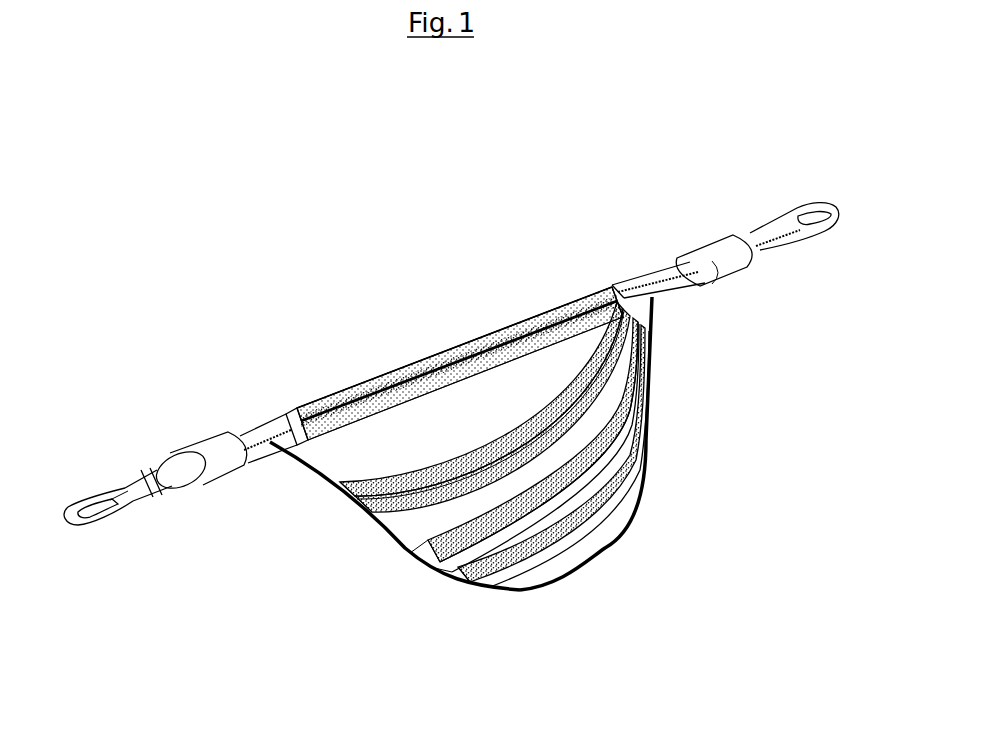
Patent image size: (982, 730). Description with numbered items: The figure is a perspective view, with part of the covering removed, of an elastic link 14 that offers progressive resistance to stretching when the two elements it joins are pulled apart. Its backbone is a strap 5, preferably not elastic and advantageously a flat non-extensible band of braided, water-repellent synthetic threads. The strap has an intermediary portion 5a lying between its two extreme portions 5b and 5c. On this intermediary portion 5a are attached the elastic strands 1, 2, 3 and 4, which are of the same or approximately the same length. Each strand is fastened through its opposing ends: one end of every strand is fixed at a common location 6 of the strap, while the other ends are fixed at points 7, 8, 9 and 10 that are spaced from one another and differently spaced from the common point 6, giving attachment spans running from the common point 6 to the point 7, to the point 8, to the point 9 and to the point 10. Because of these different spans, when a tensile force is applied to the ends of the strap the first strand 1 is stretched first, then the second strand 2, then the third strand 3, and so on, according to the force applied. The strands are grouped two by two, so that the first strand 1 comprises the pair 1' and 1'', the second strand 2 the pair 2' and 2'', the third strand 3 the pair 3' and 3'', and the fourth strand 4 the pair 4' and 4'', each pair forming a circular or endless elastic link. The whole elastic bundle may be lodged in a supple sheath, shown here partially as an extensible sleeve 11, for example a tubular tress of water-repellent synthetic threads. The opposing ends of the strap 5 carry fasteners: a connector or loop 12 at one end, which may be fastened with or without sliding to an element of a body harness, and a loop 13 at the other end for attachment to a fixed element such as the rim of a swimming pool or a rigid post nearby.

The first elastic strand 1 is at (460, 361).
The strand of first pair 1' is at (459, 329).
The strand of first pair 1'' is at (454, 313).
The second elastic strand 2 is at (395, 530).
The strand of second pair 2' is at (453, 449).
The strand of second pair 2'' is at (434, 431).
The third elastic strand 3 is at (515, 410).
The strand of third pair 3' is at (539, 473).
The strand of third pair 3'' is at (407, 606).
The fourth elastic strand 4 is at (586, 453).
The strand of fourth pair 4' is at (594, 459).
The strand of fourth pair 4'' is at (517, 609).
The strap 5 is at (238, 437).
The intermediary portion of the strap 5a is at (646, 456).
The extreme portion of the strap 5b is at (677, 268).
The extreme portion of the strap 5c is at (262, 437).
The common connection point 6 is at (650, 295).
The attachment point 7 is at (293, 430).
The attachment point 8 is at (355, 483).
The attachment point 9 is at (418, 548).
The attachment point 10 is at (462, 585).
The extensible sleeve 11 is at (722, 250).
The connector or loop 12 is at (97, 523).
The loop 13 is at (797, 208).
The elastic link 14 is at (357, 347).